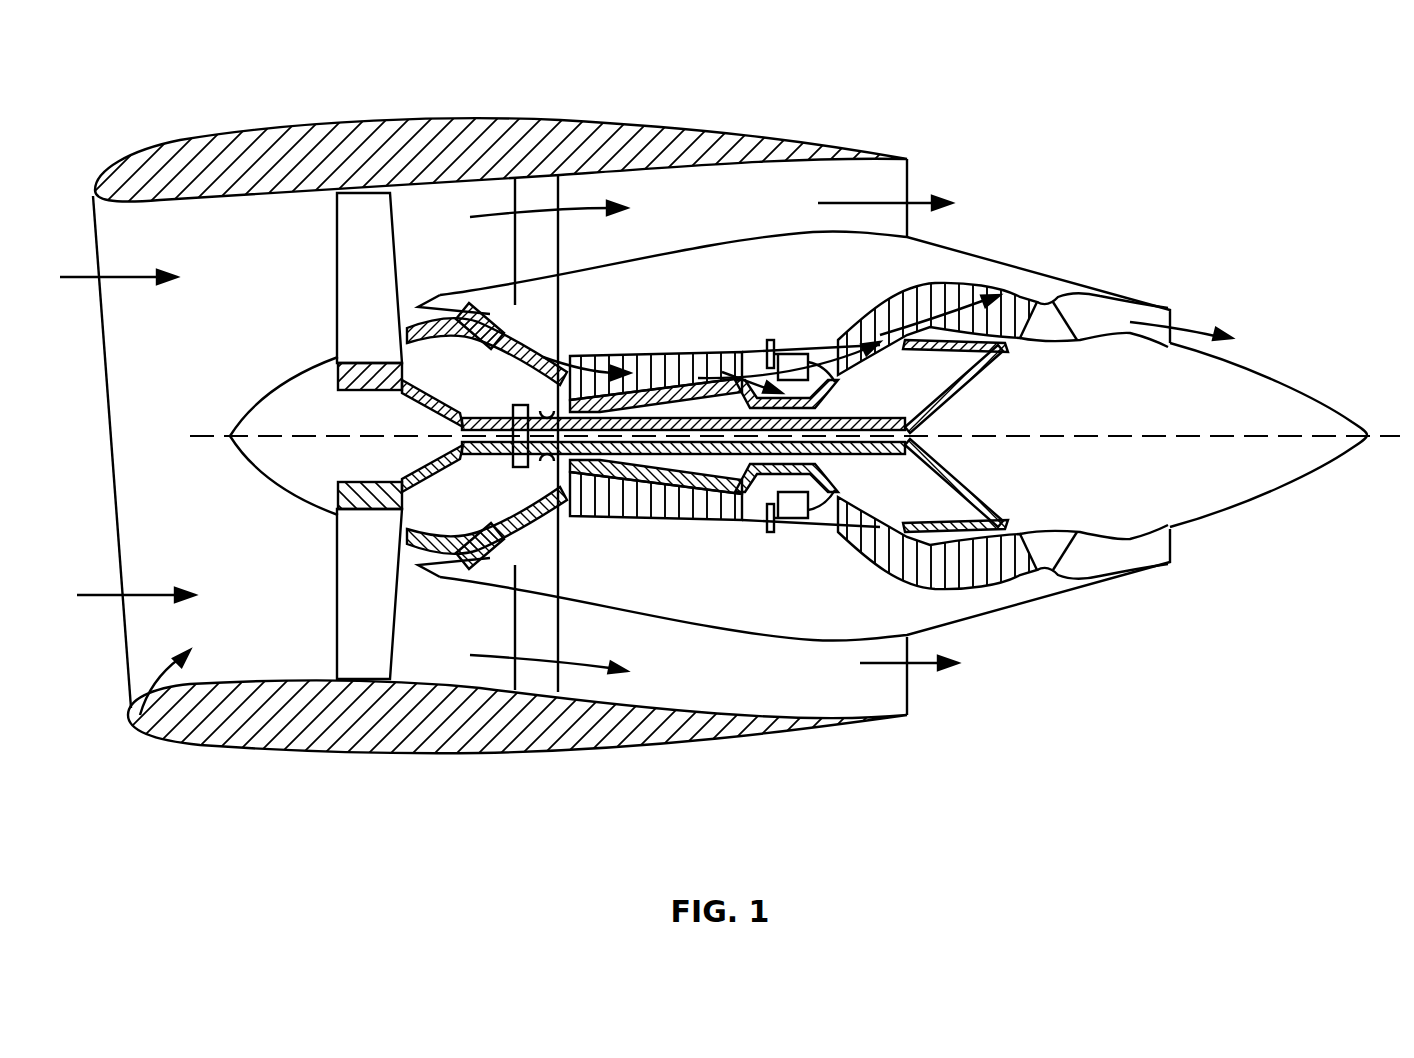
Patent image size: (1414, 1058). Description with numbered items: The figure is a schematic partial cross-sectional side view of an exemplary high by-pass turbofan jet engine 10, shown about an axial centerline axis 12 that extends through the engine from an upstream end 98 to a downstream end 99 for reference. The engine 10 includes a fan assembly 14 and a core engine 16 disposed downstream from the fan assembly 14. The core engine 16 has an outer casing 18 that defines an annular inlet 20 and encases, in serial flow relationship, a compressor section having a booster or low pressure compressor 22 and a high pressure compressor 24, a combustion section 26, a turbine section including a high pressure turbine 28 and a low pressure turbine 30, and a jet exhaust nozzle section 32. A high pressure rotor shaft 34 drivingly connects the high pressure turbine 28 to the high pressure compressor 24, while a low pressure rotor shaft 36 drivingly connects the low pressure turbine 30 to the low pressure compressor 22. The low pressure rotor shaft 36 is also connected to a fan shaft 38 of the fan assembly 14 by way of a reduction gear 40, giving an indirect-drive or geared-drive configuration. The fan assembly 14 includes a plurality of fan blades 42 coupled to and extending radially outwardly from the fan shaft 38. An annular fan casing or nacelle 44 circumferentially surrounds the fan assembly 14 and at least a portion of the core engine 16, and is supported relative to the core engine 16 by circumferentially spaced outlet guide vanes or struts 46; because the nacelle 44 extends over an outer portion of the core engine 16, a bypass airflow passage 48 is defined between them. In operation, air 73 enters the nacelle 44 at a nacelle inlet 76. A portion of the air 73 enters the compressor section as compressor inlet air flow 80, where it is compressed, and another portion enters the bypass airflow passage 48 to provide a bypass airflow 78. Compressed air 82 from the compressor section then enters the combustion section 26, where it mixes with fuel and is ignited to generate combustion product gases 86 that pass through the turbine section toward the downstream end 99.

The high by-pass turbofan jet engine 10 is at (1087, 120).
The axial centerline axis 12 is at (1125, 432).
The fan assembly 14 is at (430, 223).
The core engine 16 is at (767, 238).
The outer casing 18 is at (738, 627).
The annular inlet 20 is at (448, 562).
The low pressure compressor 22 is at (507, 507).
The high pressure compressor 24 is at (591, 508).
The combustion section 26 is at (794, 508).
The high pressure turbine 28 is at (851, 519).
The low pressure turbine 30 is at (993, 588).
The jet exhaust nozzle section 32 is at (1077, 560).
The high pressure rotor shaft 34 is at (838, 398).
The low pressure rotor shaft 36 is at (943, 387).
The fan shaft 38 is at (407, 394).
The reduction gear 40 is at (518, 405).
The fan blades 42 is at (342, 278).
The nacelle 44 is at (340, 117).
The outlet guide vanes 46 is at (543, 188).
The bypass airflow passage 48 is at (707, 222).
The air 73 is at (140, 273).
The nacelle inlet 76 is at (160, 694).
The bypass airflow 78 is at (573, 217).
The compressor inlet air flow 80 is at (445, 312).
The compressed air 82 is at (582, 357).
The combustion product gases 86 is at (838, 366).
The upstream end 98 is at (61, 450).
The downstream end 99 is at (1368, 495).